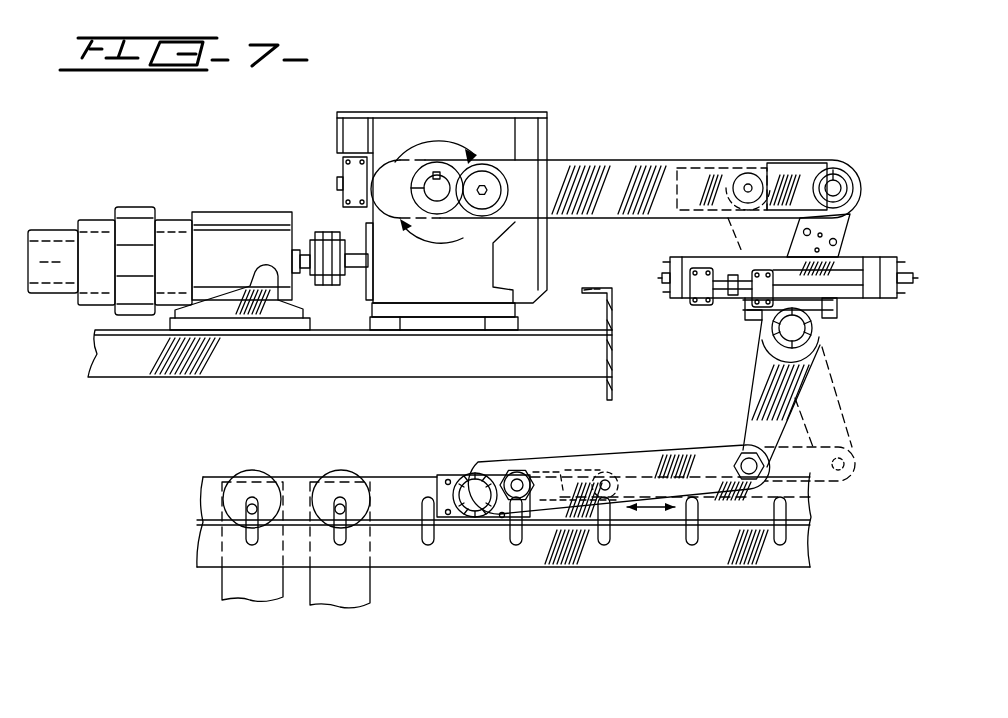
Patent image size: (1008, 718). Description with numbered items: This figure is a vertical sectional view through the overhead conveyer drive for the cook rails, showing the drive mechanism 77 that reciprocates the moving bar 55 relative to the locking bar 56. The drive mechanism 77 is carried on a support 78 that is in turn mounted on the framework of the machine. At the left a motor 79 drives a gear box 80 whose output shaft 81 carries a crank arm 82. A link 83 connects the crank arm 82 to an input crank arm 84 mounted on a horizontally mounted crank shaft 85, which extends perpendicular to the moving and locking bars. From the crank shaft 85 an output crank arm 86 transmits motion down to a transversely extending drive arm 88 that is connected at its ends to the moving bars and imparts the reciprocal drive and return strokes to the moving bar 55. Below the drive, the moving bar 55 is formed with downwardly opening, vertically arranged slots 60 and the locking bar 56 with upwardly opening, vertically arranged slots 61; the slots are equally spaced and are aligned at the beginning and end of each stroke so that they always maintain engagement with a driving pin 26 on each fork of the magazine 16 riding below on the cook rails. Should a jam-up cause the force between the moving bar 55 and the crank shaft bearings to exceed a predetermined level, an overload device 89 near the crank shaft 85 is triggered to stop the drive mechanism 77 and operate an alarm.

The magazine 16 is at (288, 600).
The driving pin 26 is at (257, 502).
The moving bar 55 is at (800, 495).
The locking bar 56 is at (790, 552).
The slot 60 is at (783, 512).
The slot 61 is at (787, 530).
The drive mechanism 77 is at (430, 100).
The support 78 is at (350, 362).
The motor 79 is at (218, 222).
The gear box 80 is at (485, 137).
The output shaft 81 is at (440, 196).
The crank arm 82 is at (453, 207).
The link 83 is at (612, 175).
The input crank arm 84 is at (837, 238).
The crank shaft 85 is at (807, 337).
The output crank arm 86 is at (748, 368).
The drive arm 88 is at (463, 482).
The overload device 89 is at (700, 244).